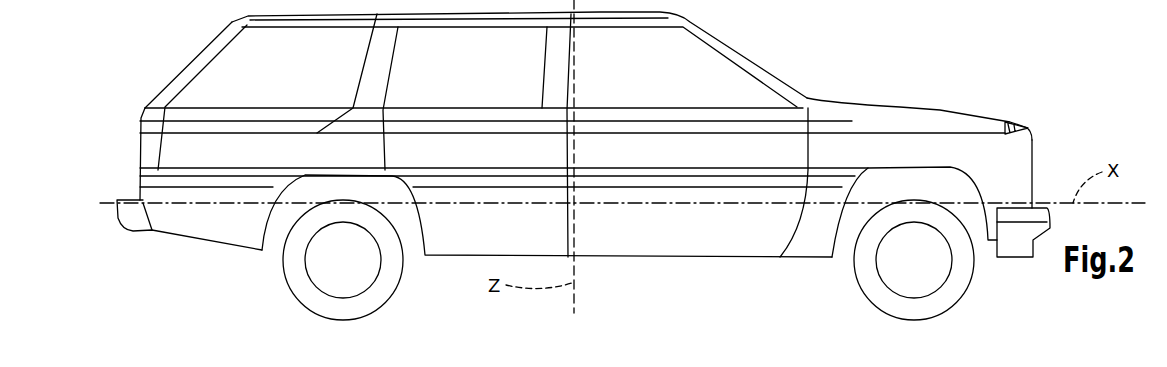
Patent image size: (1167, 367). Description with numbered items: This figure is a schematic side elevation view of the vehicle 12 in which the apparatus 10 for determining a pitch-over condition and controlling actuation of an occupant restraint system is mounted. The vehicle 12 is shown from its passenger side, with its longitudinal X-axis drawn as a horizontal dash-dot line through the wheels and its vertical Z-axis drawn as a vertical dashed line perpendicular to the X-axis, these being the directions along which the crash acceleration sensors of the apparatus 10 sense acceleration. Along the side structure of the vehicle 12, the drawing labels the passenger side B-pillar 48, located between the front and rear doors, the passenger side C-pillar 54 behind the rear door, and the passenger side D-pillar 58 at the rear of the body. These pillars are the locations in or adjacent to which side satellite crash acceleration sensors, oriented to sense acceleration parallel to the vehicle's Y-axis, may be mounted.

The apparatus 10 is at (850, 76).
The vehicle 12 is at (948, 101).
The passenger side B-pillar 48 is at (560, 71).
The C-pillar 54 is at (378, 62).
The D-pillar 58 is at (212, 47).